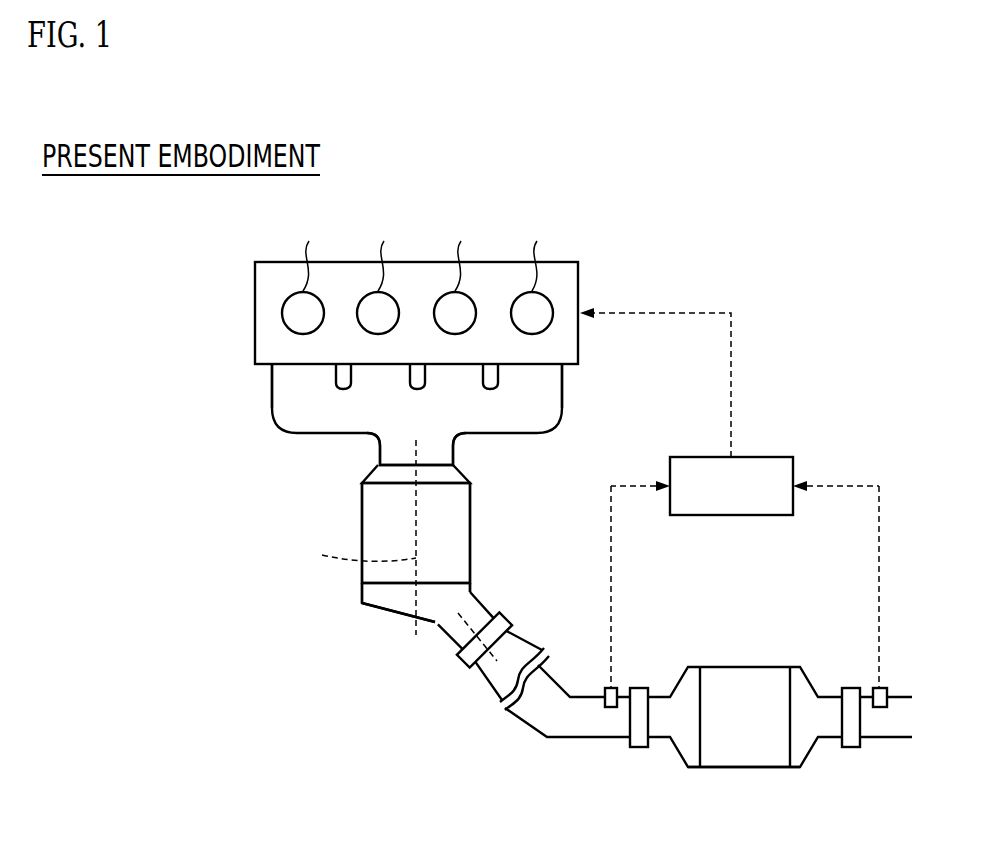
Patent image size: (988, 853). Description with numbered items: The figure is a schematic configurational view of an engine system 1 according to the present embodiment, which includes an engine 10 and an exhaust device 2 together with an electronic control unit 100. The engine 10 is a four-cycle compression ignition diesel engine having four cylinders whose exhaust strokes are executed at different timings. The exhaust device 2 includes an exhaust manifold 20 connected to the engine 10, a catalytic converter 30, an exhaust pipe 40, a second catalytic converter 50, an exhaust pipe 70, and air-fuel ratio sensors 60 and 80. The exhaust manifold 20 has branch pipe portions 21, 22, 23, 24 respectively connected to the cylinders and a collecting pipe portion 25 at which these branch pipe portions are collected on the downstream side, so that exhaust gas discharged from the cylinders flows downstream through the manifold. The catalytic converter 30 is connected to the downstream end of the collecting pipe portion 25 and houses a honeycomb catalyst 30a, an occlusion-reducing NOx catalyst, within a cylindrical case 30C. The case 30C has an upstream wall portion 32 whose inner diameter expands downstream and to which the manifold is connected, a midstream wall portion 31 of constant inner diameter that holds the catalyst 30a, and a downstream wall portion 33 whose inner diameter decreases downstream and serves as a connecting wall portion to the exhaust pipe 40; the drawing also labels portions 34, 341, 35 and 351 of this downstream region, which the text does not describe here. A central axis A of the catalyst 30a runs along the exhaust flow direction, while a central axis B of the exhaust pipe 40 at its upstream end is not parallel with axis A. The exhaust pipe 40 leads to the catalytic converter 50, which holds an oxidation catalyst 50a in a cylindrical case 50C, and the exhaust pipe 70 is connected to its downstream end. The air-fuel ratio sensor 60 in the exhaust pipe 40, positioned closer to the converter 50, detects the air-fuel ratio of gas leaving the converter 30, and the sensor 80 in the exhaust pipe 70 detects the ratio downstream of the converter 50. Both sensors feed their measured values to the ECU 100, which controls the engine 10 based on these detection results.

The engine system 1 is at (818, 268).
The exhaust device 2 is at (261, 686).
The engine 10 is at (582, 255).
The exhaust manifold 20 is at (256, 388).
The branch pipe portion 21 is at (540, 385).
The branch pipe portion 22 is at (463, 387).
The branch pipe portion 23 is at (370, 382).
The branch pipe portion 24 is at (277, 406).
The collecting pipe portion 25 is at (446, 453).
The catalytic converter 30 is at (486, 507).
The catalyst 30a is at (458, 558).
The case 30C is at (360, 574).
The midstream wall portion 31 is at (362, 520).
The upstream wall portion 32 is at (383, 480).
The downstream wall portion 33 is at (550, 562).
The outlet cone 34 is at (461, 588).
The inclined wall of outlet cone 341 is at (373, 607).
The outlet flange 35 is at (481, 608).
The outlet pipe portion 351 is at (451, 628).
The exhaust pipe 40 is at (543, 729).
The catalytic converter 50 is at (728, 666).
The catalyst 50a is at (770, 682).
The case 50C is at (725, 768).
The air-fuel ratio sensor 60 is at (603, 687).
The exhaust pipe 70 is at (880, 739).
The air-fuel ratio sensor 80 is at (877, 687).
The electronic control unit 100 is at (782, 456).
The central axis A is at (359, 559).
The central axis B is at (486, 672).